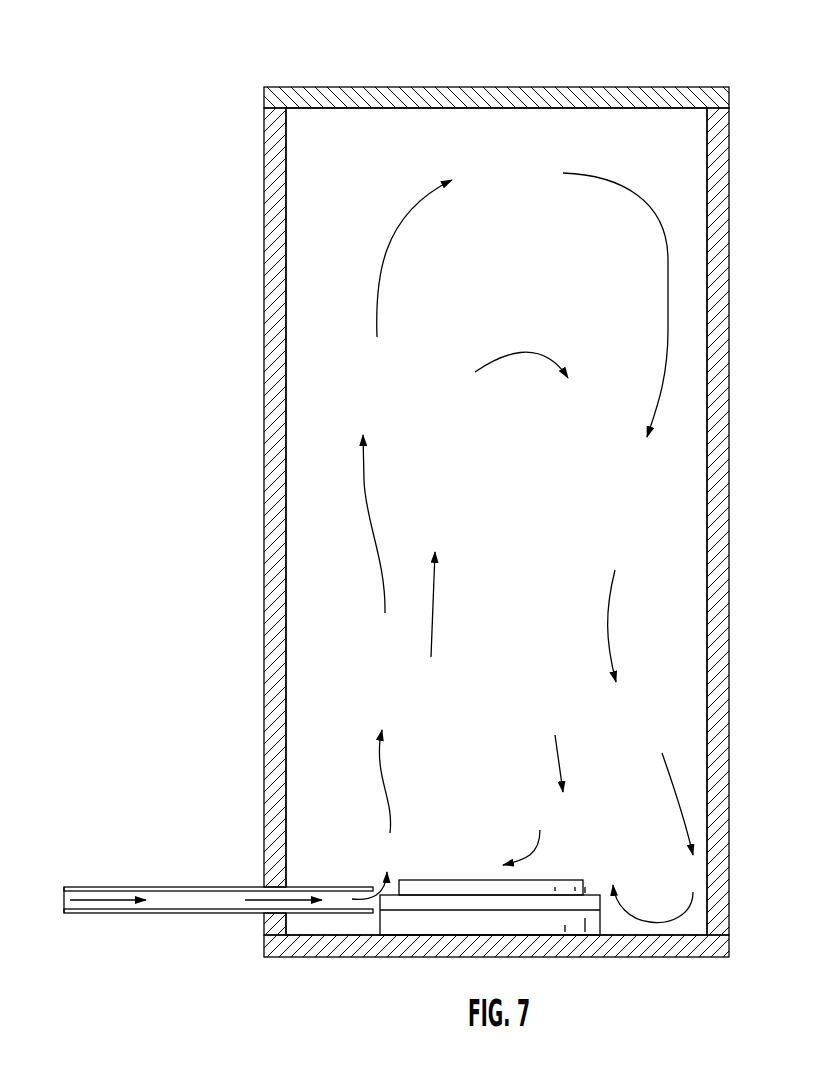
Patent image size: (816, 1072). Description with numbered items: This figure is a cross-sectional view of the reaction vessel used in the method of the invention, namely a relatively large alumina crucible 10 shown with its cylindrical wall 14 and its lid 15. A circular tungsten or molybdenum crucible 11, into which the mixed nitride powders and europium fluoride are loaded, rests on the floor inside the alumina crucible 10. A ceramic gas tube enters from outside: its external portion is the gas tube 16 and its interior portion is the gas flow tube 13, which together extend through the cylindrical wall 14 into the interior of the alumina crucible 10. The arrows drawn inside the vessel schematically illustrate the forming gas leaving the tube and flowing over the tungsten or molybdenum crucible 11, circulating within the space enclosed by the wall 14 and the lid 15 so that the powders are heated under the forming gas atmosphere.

The alumina crucible 10 is at (235, 477).
The tungsten or molybdenum crucible 11 is at (505, 888).
The gas flow tube 13 is at (300, 887).
The cylindrical wall 14 is at (283, 148).
The lid 15 is at (415, 87).
The gas tube 16 is at (187, 887).